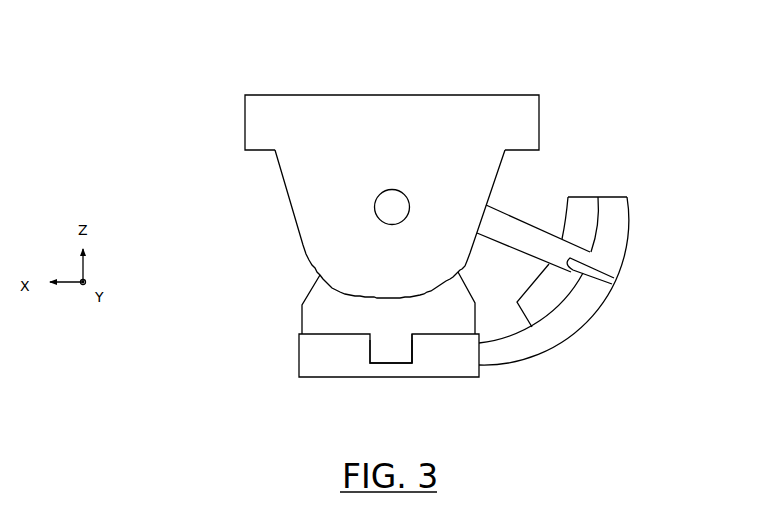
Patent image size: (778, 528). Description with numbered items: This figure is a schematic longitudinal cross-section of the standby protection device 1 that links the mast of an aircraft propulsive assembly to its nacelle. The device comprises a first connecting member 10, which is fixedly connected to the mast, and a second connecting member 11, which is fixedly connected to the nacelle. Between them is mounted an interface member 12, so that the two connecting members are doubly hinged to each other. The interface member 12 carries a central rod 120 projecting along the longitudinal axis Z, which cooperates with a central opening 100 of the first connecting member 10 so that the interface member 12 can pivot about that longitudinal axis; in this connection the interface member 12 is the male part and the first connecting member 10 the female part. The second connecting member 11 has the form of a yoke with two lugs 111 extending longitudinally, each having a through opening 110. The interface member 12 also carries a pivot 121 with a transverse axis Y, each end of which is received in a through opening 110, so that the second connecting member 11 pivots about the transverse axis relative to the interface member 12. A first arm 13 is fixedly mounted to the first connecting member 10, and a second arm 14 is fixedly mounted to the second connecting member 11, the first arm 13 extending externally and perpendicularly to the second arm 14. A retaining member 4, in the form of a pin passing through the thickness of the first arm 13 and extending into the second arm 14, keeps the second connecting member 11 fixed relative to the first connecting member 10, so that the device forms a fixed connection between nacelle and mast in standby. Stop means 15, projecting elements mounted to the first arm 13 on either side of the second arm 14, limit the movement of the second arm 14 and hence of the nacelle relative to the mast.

The standby protection device 1 is at (594, 65).
The first connecting member 10 is at (296, 356).
The central opening 100 is at (414, 353).
The central rod 120 is at (367, 380).
The second connecting member 11 is at (241, 121).
The through opening 110 is at (374, 203).
The pivot 121 is at (392, 197).
The lug 111 is at (313, 237).
The interface member 12 is at (300, 292).
The first arm 13 is at (557, 346).
The second arm 14 is at (522, 216).
The stop means 15 is at (587, 218).
The retaining member 4 is at (621, 281).